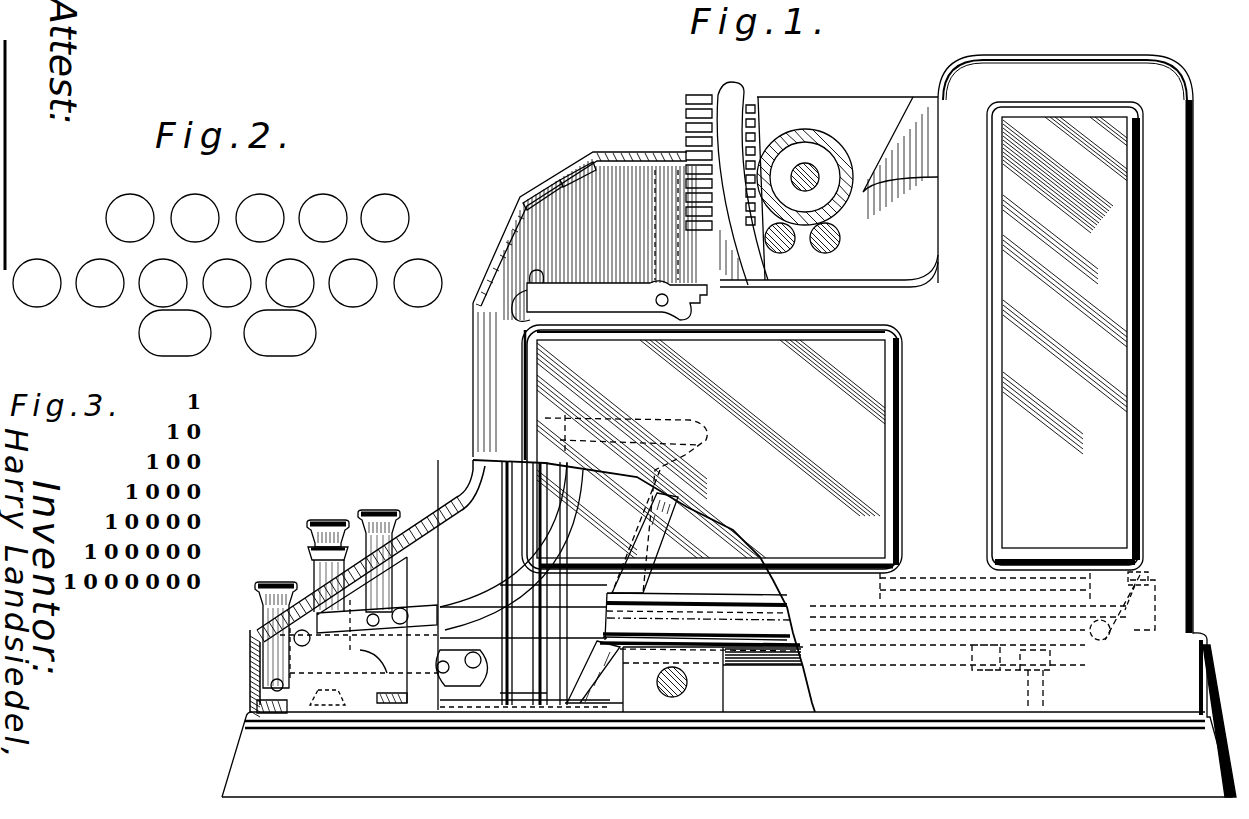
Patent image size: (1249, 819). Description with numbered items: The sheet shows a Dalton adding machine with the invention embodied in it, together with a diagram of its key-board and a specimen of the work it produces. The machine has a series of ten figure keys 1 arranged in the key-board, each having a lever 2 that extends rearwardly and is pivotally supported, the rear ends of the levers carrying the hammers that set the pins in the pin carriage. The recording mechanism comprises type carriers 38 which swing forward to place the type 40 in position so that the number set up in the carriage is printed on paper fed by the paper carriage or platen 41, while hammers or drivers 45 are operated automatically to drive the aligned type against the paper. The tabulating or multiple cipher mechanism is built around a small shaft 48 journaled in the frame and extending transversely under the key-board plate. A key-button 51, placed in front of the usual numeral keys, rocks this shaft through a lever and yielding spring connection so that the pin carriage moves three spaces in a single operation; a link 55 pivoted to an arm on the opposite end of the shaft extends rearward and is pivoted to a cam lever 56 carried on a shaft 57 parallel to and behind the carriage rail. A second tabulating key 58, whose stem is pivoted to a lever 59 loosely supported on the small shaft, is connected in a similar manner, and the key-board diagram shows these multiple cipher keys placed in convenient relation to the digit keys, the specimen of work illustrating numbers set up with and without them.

In FIG. 1, the figure keys 1 is at (377, 511).
In FIG. 2, the figure keys 1 is at (377, 200).
In FIG. 1, the levers 2 is at (573, 620).
In FIG. 1, the type carriers 38 is at (737, 253).
In FIG. 1, the type 40 is at (700, 128).
In FIG. 1, the paper carriage or platen 41 is at (798, 138).
In FIG. 1, the hammers or drivers 45 is at (632, 258).
In FIG. 1, the small shaft 48 is at (328, 692).
In FIG. 2, the key-button 51 is at (148, 340).
In FIG. 1, the link 55 is at (373, 663).
In FIG. 1, the cam lever 56 is at (1157, 630).
In FIG. 1, the shaft 57 is at (1145, 573).
In FIG. 1, the key 58 is at (280, 582).
In FIG. 2, the key 58 is at (310, 338).
In FIG. 1, the lever 59 is at (278, 692).